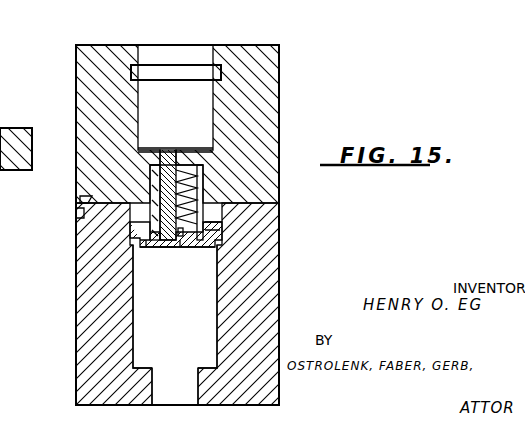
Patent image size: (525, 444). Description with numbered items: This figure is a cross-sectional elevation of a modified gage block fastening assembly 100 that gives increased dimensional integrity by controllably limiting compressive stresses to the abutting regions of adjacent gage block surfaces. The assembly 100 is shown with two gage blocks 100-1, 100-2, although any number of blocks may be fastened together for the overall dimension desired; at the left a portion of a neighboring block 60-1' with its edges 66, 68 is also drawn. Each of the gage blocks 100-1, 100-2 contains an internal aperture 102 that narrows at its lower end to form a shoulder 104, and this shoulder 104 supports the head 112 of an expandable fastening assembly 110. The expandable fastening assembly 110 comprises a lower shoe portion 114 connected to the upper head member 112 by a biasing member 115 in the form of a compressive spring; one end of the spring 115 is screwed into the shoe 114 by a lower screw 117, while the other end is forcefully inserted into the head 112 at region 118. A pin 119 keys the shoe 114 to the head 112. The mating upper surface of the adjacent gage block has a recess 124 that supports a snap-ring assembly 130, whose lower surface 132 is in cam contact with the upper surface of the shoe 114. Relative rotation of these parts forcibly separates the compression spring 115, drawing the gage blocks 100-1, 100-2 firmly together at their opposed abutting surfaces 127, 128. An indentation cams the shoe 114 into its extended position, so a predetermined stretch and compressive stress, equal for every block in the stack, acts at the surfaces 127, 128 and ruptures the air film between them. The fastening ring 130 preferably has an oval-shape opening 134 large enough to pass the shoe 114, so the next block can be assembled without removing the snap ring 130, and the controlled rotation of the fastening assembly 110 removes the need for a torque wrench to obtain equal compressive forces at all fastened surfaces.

The gage block fastening assembly 100 is at (70, 252).
The gage block 100-1 is at (95, 363).
The gage block 100-2 is at (270, 97).
The internal aperture 102 is at (150, 315).
The shoulder 104 is at (140, 366).
The expandable fastening assembly 110 is at (218, 216).
The head 112 is at (205, 158).
The shoe portion 114 is at (147, 255).
The biasing member 115 is at (202, 197).
The screw 117 is at (181, 255).
The region 118 is at (180, 198).
The pin 119 is at (168, 250).
The recess 124 is at (217, 72).
The abutting surface 127 is at (80, 212).
The abutting surface 128 is at (80, 197).
The snap-ring assembly 130 is at (220, 230).
The lower surface 132 is at (207, 248).
The oval-shape opening 134 is at (188, 248).
The adjacent member 60-1' is at (27, 140).
The shouldered recess 66 is at (2, 130).
The lower edge of member 68 is at (8, 170).